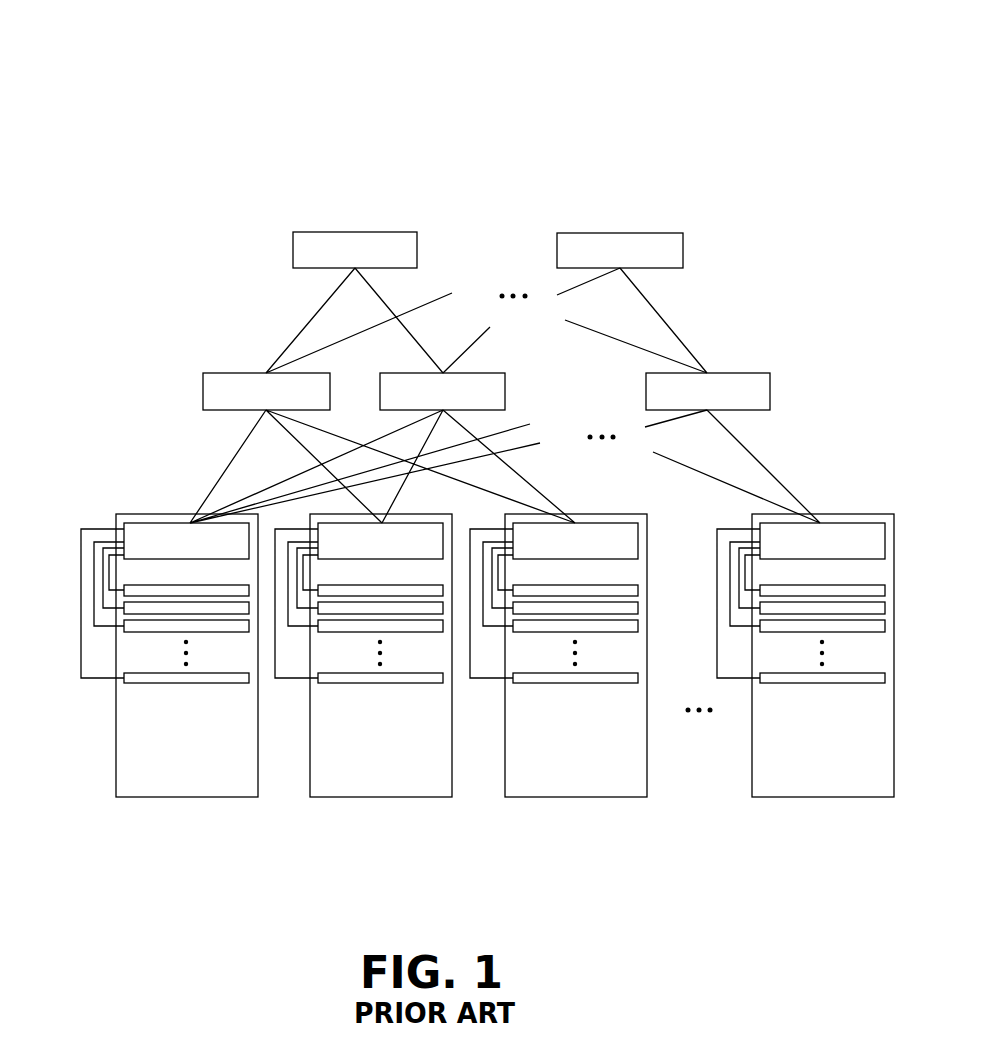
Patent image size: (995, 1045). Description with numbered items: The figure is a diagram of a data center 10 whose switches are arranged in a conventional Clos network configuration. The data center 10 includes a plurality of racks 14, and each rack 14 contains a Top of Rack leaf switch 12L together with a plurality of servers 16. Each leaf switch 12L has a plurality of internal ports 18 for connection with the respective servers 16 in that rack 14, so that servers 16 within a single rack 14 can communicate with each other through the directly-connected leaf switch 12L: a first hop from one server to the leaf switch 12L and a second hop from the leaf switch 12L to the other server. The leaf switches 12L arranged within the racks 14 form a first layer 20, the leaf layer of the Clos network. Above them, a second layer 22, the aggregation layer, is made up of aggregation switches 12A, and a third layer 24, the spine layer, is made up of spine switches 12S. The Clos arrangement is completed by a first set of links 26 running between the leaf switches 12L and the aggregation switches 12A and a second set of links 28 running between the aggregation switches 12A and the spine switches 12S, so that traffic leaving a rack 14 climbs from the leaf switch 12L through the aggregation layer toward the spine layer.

The data center 10 is at (138, 132).
The spine switch 12S is at (291, 251).
The aggregation switch 12A is at (244, 372).
The leaf switch 12L is at (157, 521).
The rack 14 is at (168, 799).
The server 16 is at (208, 694).
The internal port 18 is at (107, 518).
The first layer 20 is at (64, 515).
The second layer 22 is at (65, 362).
The third layer 24 is at (65, 222).
The first set of links 26 is at (221, 455).
The second set of links 28 is at (290, 322).